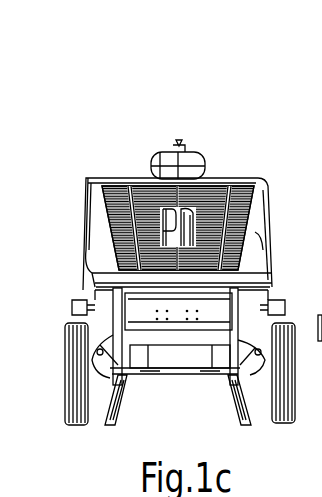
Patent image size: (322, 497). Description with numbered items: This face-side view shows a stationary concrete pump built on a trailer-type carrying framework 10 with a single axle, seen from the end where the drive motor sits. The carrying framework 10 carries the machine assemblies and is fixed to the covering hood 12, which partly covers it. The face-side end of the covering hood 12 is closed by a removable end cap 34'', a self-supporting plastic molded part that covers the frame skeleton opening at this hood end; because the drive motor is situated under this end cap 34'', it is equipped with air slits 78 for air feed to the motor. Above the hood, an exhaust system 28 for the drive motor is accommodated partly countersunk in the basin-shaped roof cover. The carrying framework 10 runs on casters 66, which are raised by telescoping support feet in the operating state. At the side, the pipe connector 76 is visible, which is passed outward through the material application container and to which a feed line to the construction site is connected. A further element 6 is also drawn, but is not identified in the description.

The covering hood 12 is at (223, 170).
The air slits 78 is at (255, 177).
The end cap 34'' is at (209, 213).
The exhaust system 28 is at (190, 173).
The carrying framework 10 is at (182, 348).
The casters 66 is at (65, 397).
The right wheel 6 is at (290, 393).
The pipe connector 76 is at (315, 325).